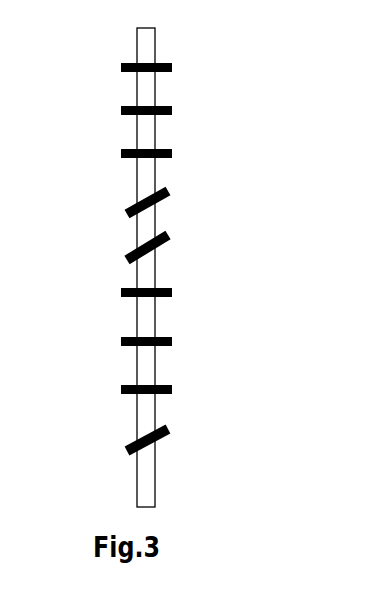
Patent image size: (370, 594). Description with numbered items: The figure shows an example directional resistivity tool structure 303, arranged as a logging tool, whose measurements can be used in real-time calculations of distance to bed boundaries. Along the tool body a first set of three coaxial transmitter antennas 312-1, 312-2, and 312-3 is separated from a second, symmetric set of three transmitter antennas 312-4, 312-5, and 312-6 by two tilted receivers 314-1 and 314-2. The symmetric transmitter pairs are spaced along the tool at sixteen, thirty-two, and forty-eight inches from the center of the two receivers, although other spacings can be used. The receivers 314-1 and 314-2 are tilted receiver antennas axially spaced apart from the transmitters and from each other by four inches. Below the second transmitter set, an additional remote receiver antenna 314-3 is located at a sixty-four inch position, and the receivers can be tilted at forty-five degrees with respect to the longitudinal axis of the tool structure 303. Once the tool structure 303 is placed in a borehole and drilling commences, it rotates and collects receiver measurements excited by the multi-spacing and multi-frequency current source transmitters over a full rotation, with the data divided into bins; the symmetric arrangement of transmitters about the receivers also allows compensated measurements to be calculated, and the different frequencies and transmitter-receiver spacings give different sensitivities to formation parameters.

The directional resistivity tool structure 303 is at (229, 162).
The transmitter antenna 312-1 is at (121, 67).
The transmitter antenna 312-2 is at (121, 110).
The transmitter antenna 312-3 is at (121, 153).
The transmitter antenna 312-4 is at (121, 293).
The transmitter antenna 312-5 is at (121, 342).
The transmitter antenna 312-6 is at (121, 390).
The tilted receiver 314-1 is at (125, 217).
The tilted receiver 314-2 is at (125, 263).
The receiver antenna 314-3 is at (130, 457).